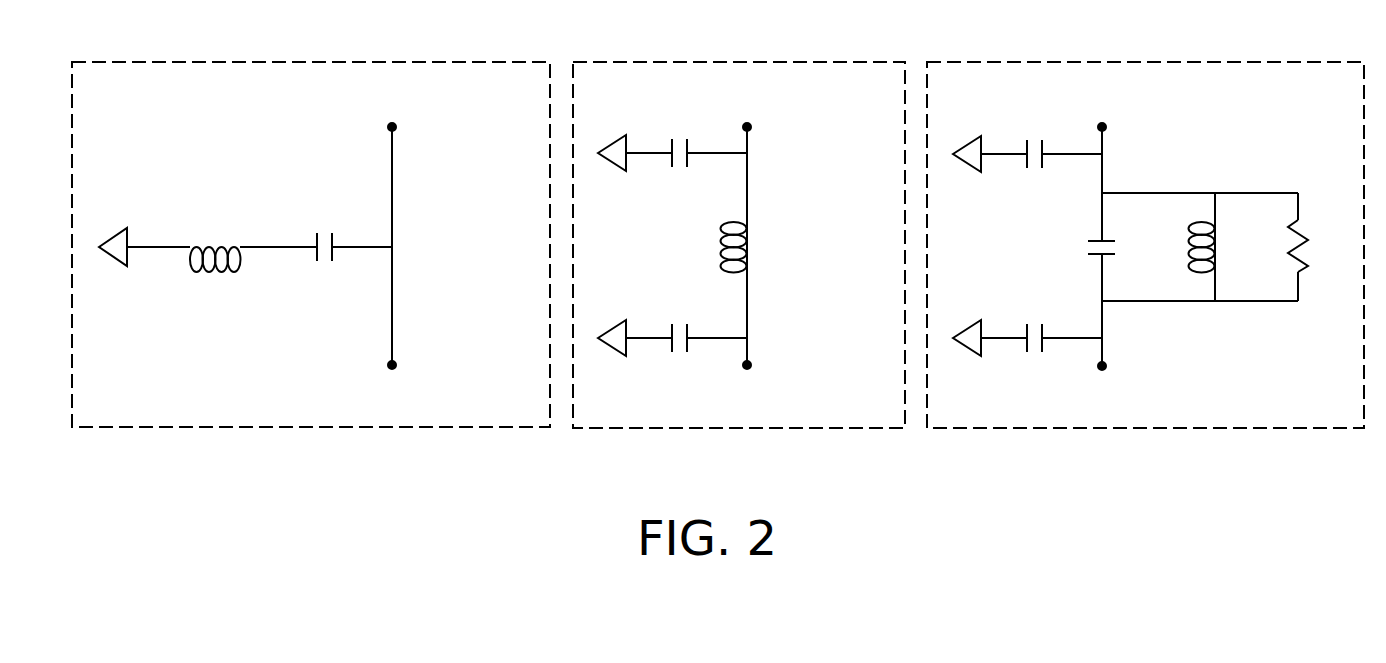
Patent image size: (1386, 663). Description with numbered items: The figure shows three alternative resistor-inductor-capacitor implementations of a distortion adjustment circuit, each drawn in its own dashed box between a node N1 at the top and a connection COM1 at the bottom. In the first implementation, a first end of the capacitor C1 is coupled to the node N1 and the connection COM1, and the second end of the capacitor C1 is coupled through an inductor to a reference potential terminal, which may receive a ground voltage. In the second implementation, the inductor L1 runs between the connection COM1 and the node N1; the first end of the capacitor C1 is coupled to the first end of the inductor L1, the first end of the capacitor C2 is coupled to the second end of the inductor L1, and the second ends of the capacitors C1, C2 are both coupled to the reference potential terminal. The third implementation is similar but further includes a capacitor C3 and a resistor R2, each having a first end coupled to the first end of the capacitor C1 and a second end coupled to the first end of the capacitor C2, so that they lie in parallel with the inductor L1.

The inductor L1 is at (720, 234).
The capacitor C1 is at (679, 293).
The capacitor C2 is at (857, 135).
The capacitor C3 is at (1121, 247).
The resistor R2 is at (1316, 246).
The node N1 is at (747, 104).
The connection COM1 is at (748, 390).